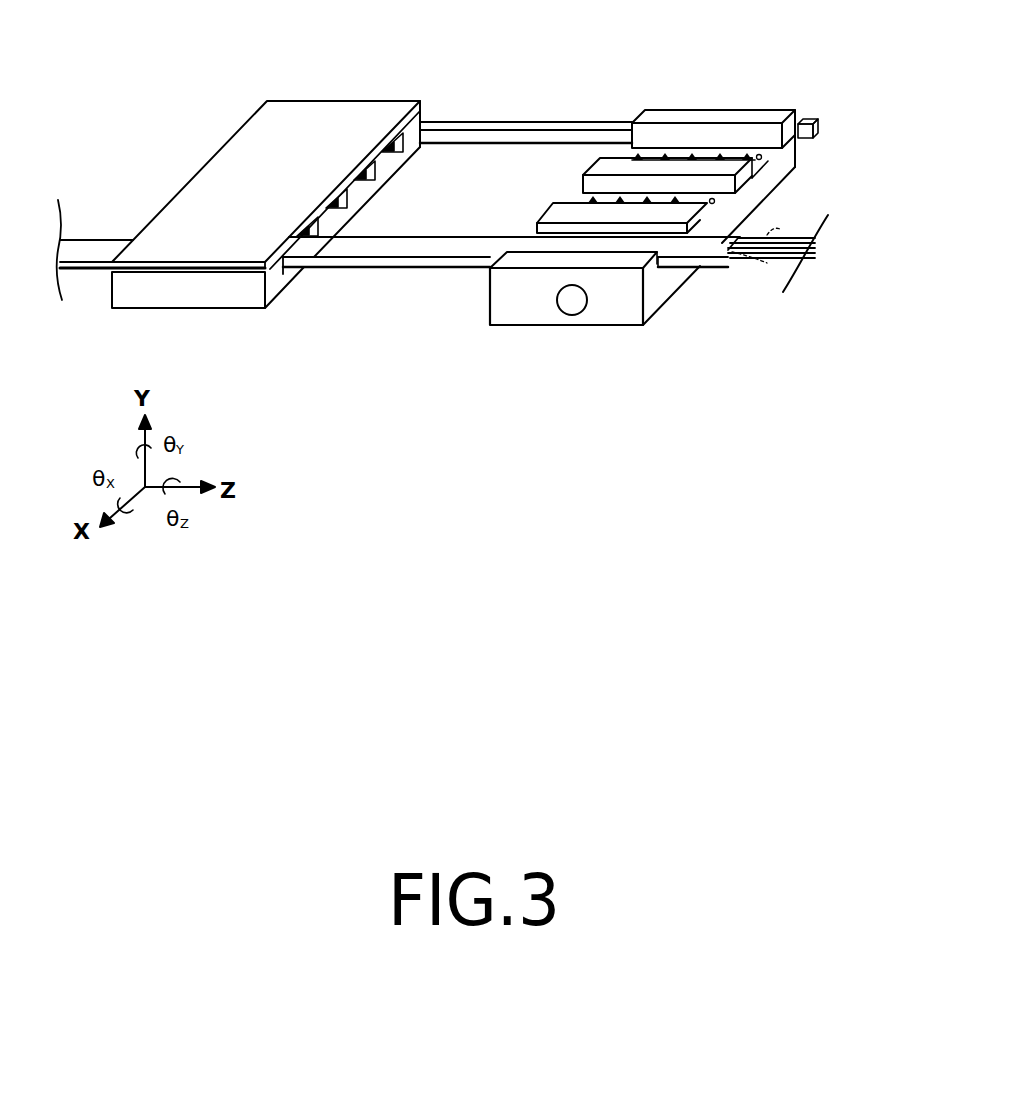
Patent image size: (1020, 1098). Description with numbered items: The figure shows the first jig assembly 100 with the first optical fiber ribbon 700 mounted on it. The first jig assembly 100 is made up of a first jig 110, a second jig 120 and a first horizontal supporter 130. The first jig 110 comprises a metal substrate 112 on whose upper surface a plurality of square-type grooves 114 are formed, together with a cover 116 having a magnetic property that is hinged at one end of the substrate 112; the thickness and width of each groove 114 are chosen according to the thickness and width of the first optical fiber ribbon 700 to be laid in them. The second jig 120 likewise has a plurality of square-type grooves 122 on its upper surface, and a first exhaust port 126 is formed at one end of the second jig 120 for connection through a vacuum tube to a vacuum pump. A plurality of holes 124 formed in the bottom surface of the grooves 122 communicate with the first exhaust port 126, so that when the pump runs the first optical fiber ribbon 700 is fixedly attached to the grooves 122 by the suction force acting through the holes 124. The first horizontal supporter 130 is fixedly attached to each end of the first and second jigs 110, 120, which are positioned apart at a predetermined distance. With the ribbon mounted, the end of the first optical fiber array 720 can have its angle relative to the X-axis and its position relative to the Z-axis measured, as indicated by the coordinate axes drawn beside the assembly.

The first jig assembly 100 is at (449, 417).
The first jig 110 is at (347, 93).
The metal substrate 112 is at (189, 293).
The square-type grooves 114 is at (352, 206).
The cover 116 is at (218, 171).
The second jig 120 is at (714, 96).
The square-type grooves 122 is at (772, 158).
The holes 124 is at (800, 160).
The first exhaust port 126 is at (582, 314).
The first horizontal supporter 130 is at (552, 123).
The first optical fiber ribbon 700 is at (376, 258).
The first optical fiber array 720 is at (752, 262).